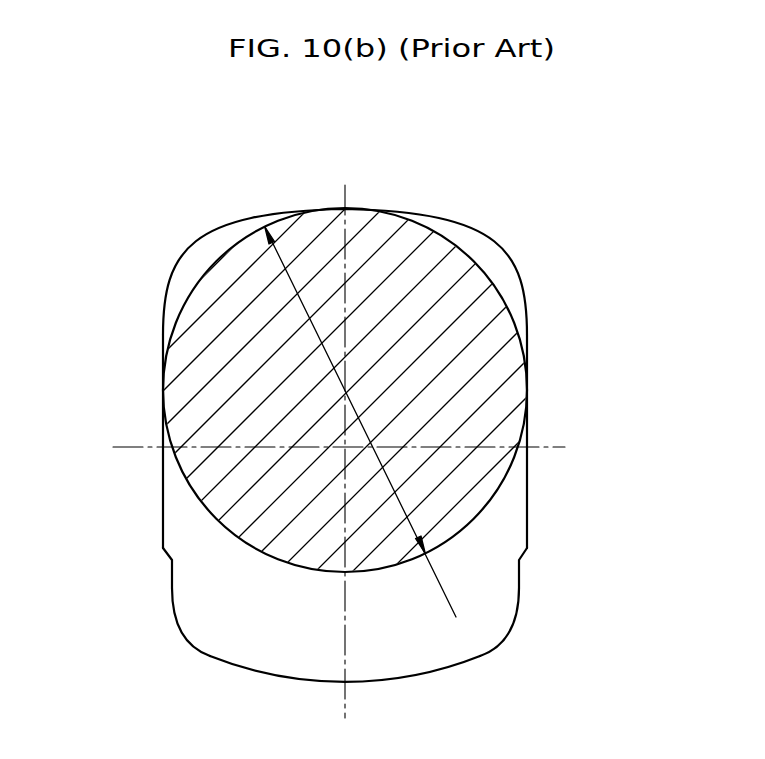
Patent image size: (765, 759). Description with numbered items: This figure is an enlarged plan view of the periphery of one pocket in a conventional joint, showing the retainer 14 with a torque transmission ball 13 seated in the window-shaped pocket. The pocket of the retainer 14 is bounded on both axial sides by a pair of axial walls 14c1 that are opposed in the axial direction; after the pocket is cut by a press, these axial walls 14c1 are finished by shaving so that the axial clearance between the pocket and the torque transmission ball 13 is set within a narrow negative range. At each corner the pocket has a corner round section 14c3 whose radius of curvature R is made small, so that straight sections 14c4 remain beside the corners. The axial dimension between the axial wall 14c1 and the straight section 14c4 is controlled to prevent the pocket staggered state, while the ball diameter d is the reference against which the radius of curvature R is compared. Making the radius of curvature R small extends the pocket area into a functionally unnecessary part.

The retainer 14 is at (359, 387).
The axial wall 14c1 is at (170, 503).
The corner round section 14c3 is at (188, 257).
The straight section 14c4 is at (168, 312).
The torque transmission ball 13 is at (298, 568).
The ball diameter d is at (374, 422).
The radius of curvature R is at (505, 252).